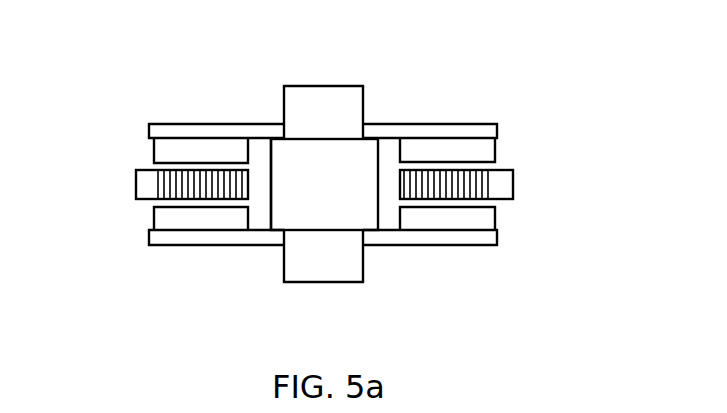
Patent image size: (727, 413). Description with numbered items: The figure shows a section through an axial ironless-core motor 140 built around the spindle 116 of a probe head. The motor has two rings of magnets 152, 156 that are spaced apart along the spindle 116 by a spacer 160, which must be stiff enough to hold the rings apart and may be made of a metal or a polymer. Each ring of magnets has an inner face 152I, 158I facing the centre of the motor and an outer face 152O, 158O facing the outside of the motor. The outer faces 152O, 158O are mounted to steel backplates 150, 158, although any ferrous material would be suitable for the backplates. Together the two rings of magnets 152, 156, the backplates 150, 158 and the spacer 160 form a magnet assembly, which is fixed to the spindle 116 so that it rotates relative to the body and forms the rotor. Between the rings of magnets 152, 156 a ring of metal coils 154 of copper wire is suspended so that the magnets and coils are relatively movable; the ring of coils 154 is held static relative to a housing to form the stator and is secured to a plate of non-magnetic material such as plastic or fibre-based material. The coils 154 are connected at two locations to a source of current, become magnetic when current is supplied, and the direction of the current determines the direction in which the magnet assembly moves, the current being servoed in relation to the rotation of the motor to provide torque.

The axial ironless-core motor 140 is at (122, 88).
The spindle 116 is at (284, 273).
The backplate 150 is at (497, 132).
The ring of magnets 152 is at (370, 109).
The inner face 152I is at (425, 160).
The outer face 152O is at (468, 138).
The ring of metal coils 154 is at (513, 182).
The ring of magnets 156 is at (497, 220).
The backplate 158 is at (364, 261).
The inner face 158I is at (433, 207).
The outer face 158O is at (462, 235).
The spacer 160 is at (272, 220).